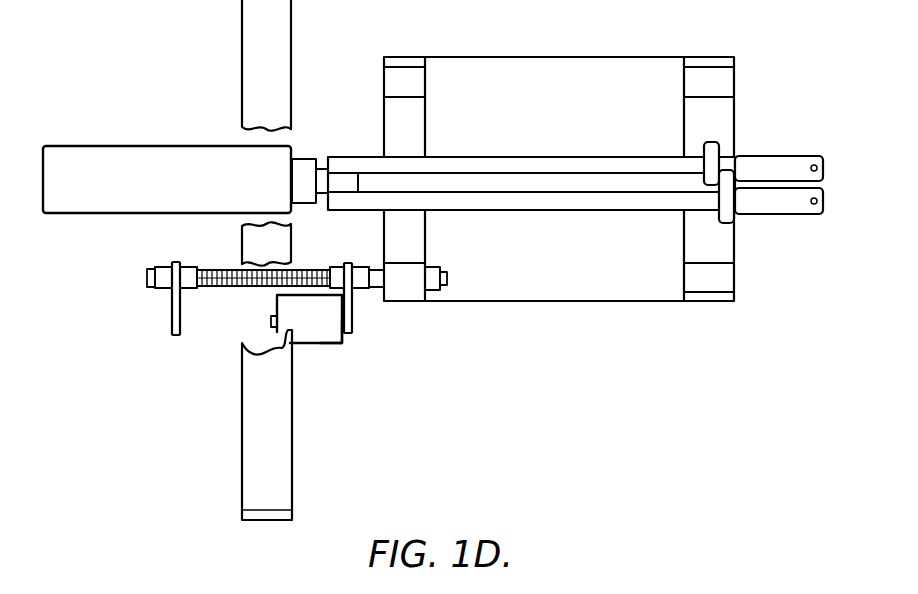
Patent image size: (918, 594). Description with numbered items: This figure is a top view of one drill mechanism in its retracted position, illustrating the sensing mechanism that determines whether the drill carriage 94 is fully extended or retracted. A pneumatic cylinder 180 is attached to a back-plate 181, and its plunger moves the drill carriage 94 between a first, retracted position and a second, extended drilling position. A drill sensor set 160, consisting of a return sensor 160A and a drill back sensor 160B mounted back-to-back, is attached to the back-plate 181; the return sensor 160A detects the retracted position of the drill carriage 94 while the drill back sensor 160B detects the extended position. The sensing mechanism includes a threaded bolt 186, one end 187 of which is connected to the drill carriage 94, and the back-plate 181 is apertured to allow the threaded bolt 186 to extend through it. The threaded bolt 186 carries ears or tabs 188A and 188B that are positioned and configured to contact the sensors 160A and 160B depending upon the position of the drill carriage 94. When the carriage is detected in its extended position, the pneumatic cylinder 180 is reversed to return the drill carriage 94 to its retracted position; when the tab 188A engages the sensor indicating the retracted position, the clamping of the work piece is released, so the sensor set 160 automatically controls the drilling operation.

The drill carriage 94 is at (416, 301).
The drill sensor set 160 is at (315, 354).
The return sensor 160A is at (345, 340).
The drill back sensor 160B is at (271, 320).
The pneumatic cylinder 180 is at (152, 146).
The back-plate 181 is at (293, 421).
The threaded bolt 186 is at (210, 266).
The end of threaded bolt 187 is at (440, 274).
The tab 188A is at (353, 316).
The tab 188B is at (170, 314).